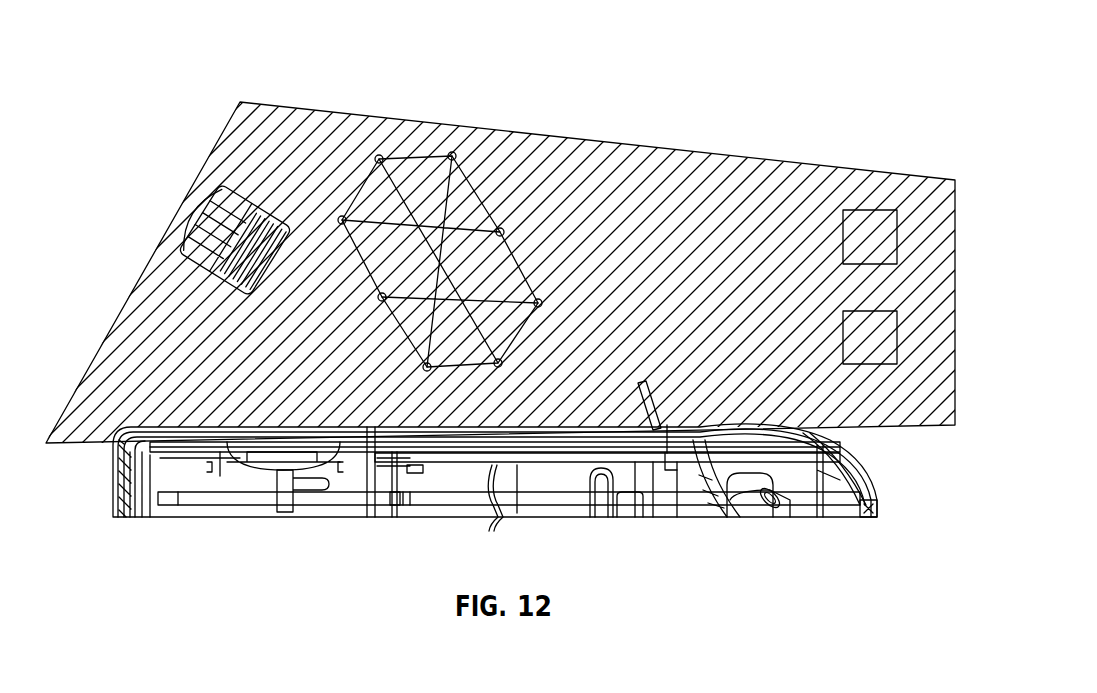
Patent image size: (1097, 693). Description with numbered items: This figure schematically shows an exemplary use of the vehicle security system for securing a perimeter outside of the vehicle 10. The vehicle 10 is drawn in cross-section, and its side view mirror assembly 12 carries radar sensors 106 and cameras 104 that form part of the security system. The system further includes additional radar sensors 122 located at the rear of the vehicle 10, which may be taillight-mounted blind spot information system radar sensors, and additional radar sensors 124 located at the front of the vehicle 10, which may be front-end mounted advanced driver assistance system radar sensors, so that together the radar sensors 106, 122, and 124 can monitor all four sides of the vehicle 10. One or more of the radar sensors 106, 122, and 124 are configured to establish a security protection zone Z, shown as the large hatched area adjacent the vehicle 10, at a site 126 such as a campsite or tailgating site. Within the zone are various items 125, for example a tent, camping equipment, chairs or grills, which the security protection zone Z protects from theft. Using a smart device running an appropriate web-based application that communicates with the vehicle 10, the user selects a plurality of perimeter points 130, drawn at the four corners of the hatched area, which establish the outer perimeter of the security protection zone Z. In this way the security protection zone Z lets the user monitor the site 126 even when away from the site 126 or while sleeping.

The vehicle 10 is at (663, 505).
The side view mirror assembly 12 is at (668, 383).
The cameras 104 is at (667, 425).
The radar sensors 106 is at (658, 427).
The radar sensors 122 is at (127, 517).
The radar sensors 124 is at (877, 520).
The items 125 is at (220, 190).
The site 126 is at (654, 232).
The perimeter points 130 is at (240, 102).
The security protection zone Z is at (704, 160).